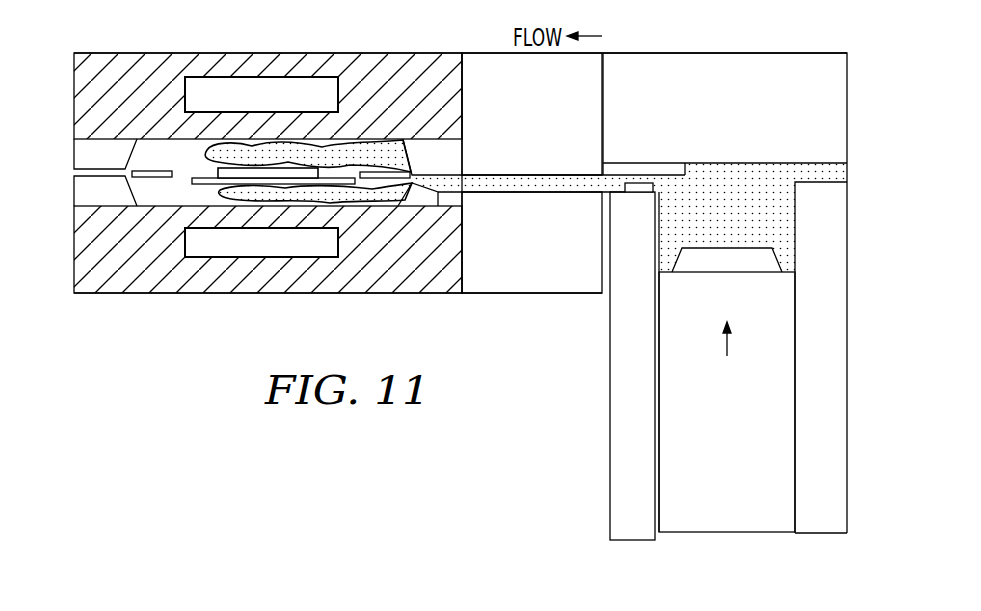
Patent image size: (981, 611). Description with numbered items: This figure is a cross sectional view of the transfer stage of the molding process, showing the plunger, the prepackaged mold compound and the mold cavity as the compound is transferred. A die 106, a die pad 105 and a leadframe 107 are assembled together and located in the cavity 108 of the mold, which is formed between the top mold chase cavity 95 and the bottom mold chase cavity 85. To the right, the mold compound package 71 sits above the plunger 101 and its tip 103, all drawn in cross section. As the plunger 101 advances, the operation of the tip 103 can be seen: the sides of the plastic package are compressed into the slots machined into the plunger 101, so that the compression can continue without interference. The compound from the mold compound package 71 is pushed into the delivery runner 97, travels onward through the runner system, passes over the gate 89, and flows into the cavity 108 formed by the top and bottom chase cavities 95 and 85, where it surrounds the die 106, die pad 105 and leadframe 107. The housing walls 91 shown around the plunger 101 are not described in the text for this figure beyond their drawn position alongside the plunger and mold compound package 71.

The mold compound package 71 is at (742, 163).
The bottom mold chase cavity 85 is at (140, 186).
The gate 89 is at (412, 177).
The cylinder housing 91 is at (616, 460).
The top mold chase cavity 95 is at (140, 160).
The delivery runner 97 is at (640, 183).
The plunger 101 is at (745, 410).
The tip 103 is at (743, 265).
The die pad 105 is at (200, 184).
The die 106 is at (268, 175).
The leadframe 107 is at (160, 170).
The cavity 108 is at (457, 158).